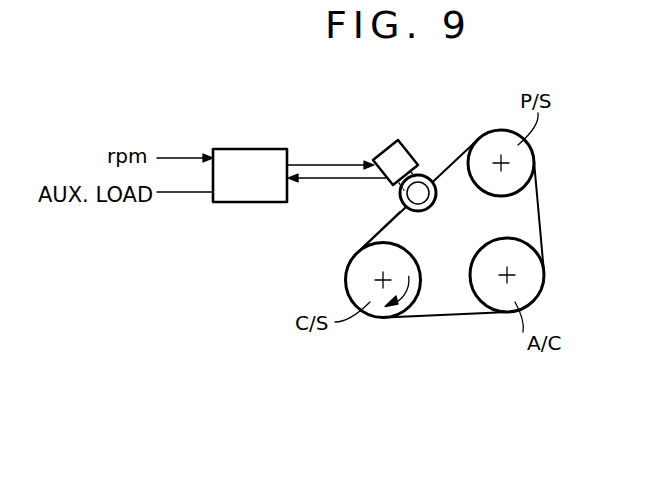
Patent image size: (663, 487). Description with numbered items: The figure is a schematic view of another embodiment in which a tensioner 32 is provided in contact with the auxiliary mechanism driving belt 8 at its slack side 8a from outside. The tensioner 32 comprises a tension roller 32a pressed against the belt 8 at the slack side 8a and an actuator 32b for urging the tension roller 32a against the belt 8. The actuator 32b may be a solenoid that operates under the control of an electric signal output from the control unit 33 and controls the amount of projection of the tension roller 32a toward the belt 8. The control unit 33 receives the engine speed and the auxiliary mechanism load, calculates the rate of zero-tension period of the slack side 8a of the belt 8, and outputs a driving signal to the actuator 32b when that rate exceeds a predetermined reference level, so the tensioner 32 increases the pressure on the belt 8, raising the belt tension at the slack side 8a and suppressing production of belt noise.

The control unit 33 is at (266, 150).
The tensioner 32 is at (379, 155).
The tension roller 32a is at (402, 203).
The actuator 32b is at (422, 140).
The auxiliary mechanism driving belt 8 is at (449, 330).
The slack side 8a is at (413, 227).